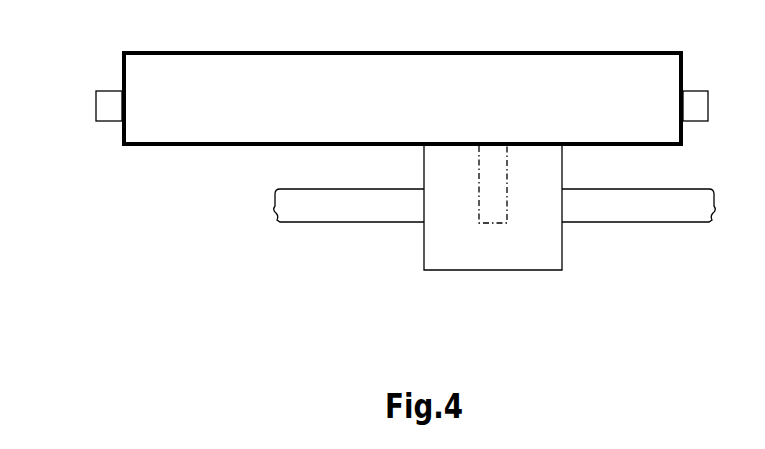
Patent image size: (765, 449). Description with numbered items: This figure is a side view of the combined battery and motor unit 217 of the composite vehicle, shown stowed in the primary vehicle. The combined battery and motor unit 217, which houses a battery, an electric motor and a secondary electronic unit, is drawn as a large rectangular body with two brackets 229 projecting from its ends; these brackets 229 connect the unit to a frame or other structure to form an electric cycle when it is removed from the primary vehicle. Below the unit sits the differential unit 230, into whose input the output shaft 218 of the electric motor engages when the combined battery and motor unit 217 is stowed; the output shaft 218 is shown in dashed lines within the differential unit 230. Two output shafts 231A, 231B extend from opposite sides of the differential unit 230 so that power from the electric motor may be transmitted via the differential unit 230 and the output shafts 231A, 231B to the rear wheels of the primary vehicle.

The combined battery and motor unit 217 is at (217, 155).
The brackets 229 is at (102, 87).
The differential unit 230 is at (423, 255).
The output shaft 218 is at (502, 223).
The output shaft 231A is at (298, 222).
The output shaft 231B is at (633, 222).